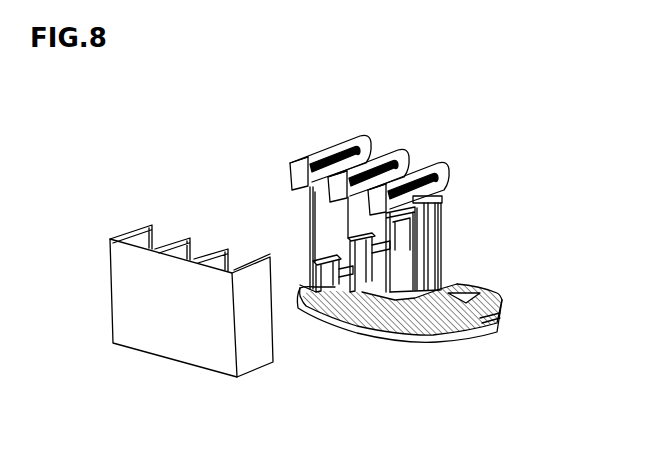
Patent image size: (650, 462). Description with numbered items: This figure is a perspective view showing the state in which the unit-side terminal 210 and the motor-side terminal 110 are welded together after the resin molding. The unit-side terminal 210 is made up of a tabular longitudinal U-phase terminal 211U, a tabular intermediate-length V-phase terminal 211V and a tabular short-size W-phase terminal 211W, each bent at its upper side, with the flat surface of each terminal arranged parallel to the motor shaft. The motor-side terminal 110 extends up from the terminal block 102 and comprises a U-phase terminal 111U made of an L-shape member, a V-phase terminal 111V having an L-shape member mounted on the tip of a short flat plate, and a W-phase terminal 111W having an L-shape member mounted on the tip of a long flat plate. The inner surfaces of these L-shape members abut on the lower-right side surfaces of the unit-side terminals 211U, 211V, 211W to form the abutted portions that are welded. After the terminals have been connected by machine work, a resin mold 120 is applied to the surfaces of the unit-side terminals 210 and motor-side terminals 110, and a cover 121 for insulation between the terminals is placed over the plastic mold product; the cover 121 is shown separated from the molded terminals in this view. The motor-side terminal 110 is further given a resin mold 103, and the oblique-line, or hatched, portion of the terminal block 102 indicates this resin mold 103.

The motor-side terminal 110 is at (470, 250).
The resin mold 120 is at (336, 225).
The cover 121 is at (207, 365).
The resin mold 103 is at (426, 344).
The terminal block 102 is at (490, 330).
The U-phase terminal 111U is at (323, 313).
The V-phase terminal 111V is at (380, 323).
The W-phase terminal 111W is at (410, 313).
The unit-side terminal 210 is at (308, 133).
The U-phase terminal 211U is at (377, 140).
The V-phase terminal 211V is at (412, 152).
The W-phase terminal 211W is at (453, 165).